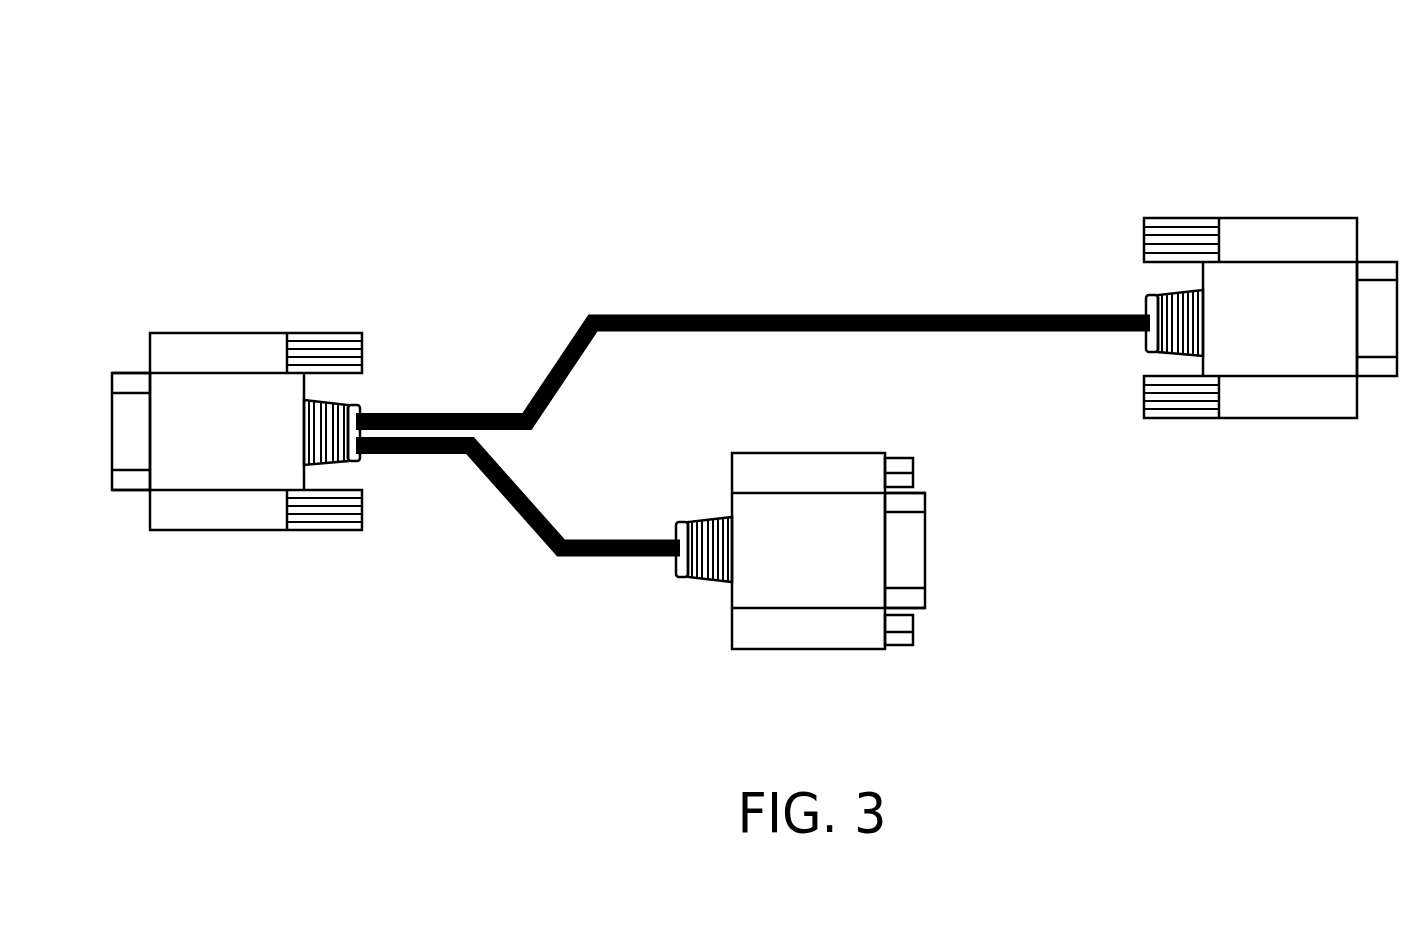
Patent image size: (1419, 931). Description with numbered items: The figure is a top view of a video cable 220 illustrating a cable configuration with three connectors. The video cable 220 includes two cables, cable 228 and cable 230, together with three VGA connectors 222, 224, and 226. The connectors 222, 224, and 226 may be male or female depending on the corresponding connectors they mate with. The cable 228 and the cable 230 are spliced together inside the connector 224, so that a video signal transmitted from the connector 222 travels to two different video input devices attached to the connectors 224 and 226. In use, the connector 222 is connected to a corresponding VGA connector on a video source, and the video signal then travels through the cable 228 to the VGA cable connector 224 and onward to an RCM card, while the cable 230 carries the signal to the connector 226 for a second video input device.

The video cable 220 is at (1207, 77).
The VGA connector 222 is at (1289, 393).
The VGA connector 224 is at (233, 510).
The VGA connector 226 is at (819, 583).
The cable 228 is at (777, 315).
The cable 230 is at (538, 540).